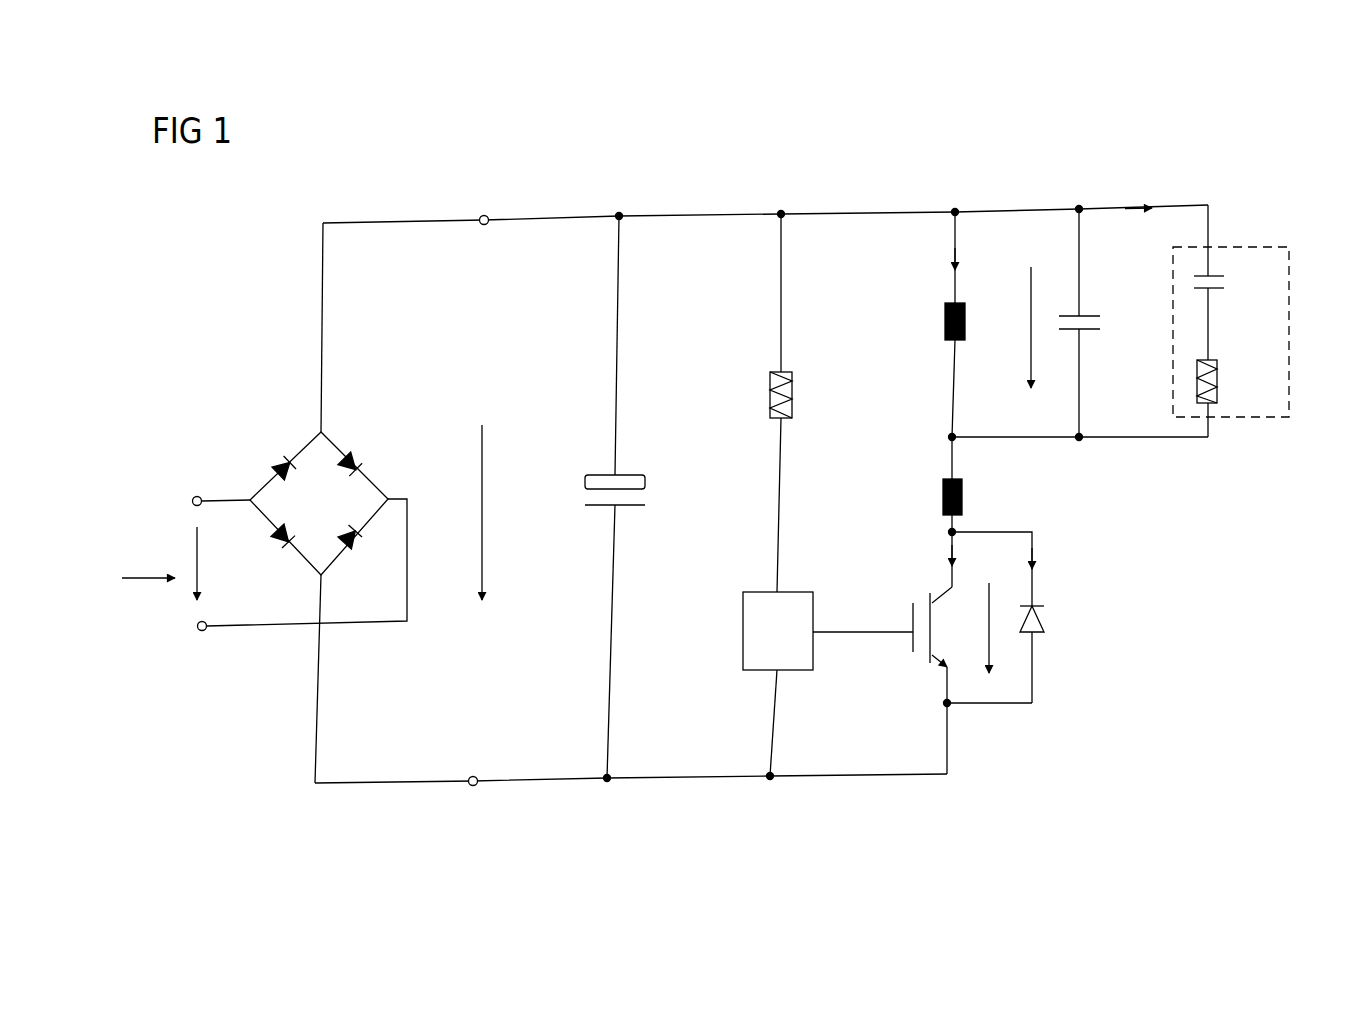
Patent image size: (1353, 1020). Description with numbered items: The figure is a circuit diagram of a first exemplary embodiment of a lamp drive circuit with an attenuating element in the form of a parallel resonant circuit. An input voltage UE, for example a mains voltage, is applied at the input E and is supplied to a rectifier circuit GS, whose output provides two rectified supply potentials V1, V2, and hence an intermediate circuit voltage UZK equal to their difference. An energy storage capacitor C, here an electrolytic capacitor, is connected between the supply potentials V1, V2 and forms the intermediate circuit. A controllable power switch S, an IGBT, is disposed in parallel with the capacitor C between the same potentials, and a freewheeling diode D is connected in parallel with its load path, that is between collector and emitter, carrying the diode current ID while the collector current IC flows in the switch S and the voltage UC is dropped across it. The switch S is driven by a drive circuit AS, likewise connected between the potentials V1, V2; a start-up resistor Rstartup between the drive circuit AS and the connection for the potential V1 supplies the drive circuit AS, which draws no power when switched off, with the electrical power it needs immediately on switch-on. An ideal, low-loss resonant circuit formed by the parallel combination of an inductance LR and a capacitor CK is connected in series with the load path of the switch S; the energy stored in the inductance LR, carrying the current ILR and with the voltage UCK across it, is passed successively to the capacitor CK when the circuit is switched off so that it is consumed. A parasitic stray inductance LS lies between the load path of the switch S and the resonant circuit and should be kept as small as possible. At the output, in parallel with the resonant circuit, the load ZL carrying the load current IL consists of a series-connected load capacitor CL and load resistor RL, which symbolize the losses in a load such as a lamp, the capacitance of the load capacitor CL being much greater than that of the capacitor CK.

The rectifier circuit GS is at (276, 443).
The input E is at (140, 580).
The input voltage UE is at (216, 563).
The rectified supply potential V1 is at (489, 202).
The rectified supply potential V2 is at (479, 798).
The intermediate circuit voltage UZK is at (507, 512).
The energy storage capacitor C is at (626, 497).
The start-up resistor Rstartup is at (735, 403).
The drive circuit AS is at (922, 565).
The resonant circuit inductance LR is at (936, 324).
The current through the inductance ILR is at (978, 266).
The voltage dropped across the inductance UCK is at (1003, 334).
The resonant circuit capacitor CK is at (1097, 323).
The load current IL is at (1144, 190).
The load ZL is at (1252, 307).
The load capacitor CL is at (1225, 285).
The load resistor RL is at (1224, 382).
The parasitic stray inductance LS is at (933, 512).
The collector current IC is at (970, 563).
The diode current ID is at (1052, 562).
The voltage dropped across the switch UC is at (1006, 639).
The controllable power switch S is at (936, 680).
The freewheeling diode D is at (1046, 654).